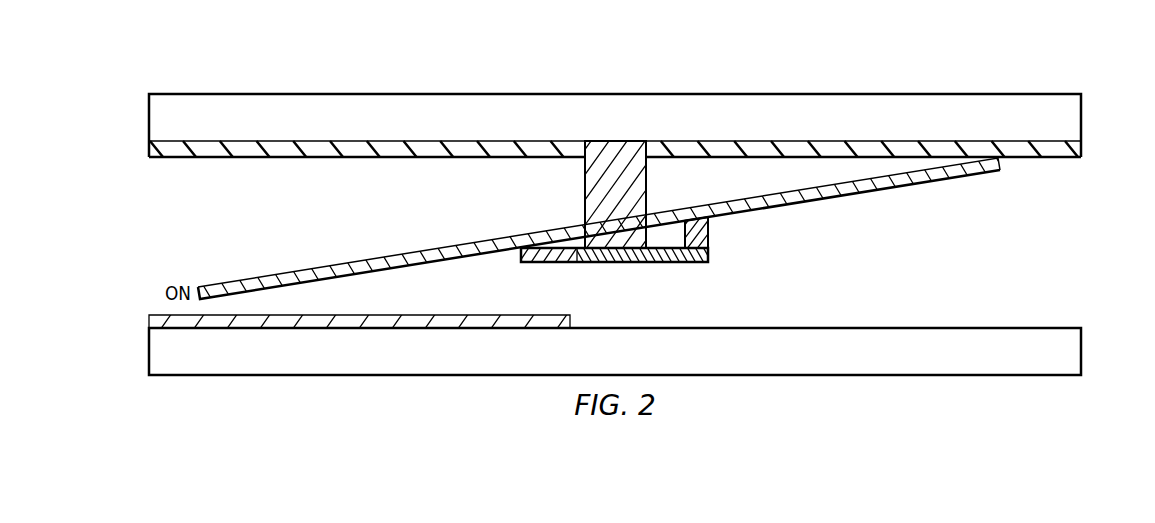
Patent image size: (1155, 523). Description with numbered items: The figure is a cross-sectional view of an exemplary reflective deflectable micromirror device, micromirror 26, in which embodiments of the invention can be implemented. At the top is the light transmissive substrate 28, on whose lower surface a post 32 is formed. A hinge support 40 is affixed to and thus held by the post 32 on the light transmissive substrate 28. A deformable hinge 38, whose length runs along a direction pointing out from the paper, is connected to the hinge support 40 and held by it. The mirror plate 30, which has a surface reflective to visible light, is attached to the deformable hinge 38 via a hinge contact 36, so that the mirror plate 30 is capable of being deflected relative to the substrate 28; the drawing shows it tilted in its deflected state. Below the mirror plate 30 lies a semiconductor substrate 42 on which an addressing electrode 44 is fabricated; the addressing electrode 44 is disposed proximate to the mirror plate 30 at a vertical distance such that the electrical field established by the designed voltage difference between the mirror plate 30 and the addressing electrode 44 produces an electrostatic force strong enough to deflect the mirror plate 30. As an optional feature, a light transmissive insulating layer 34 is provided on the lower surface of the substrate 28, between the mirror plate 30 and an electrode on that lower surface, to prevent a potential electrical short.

The micromirror 26 is at (489, 72).
The light transmissive substrate 28 is at (757, 104).
The mirror plate 30 is at (363, 262).
The post 32 is at (592, 190).
The light transmissive insulating layer 34 is at (150, 151).
The hinge contact 36 is at (710, 232).
The deformable hinge 38 is at (688, 264).
The hinge support 40 is at (547, 264).
The semiconductor substrate 42 is at (435, 364).
The addressing electrode 44 is at (149, 322).